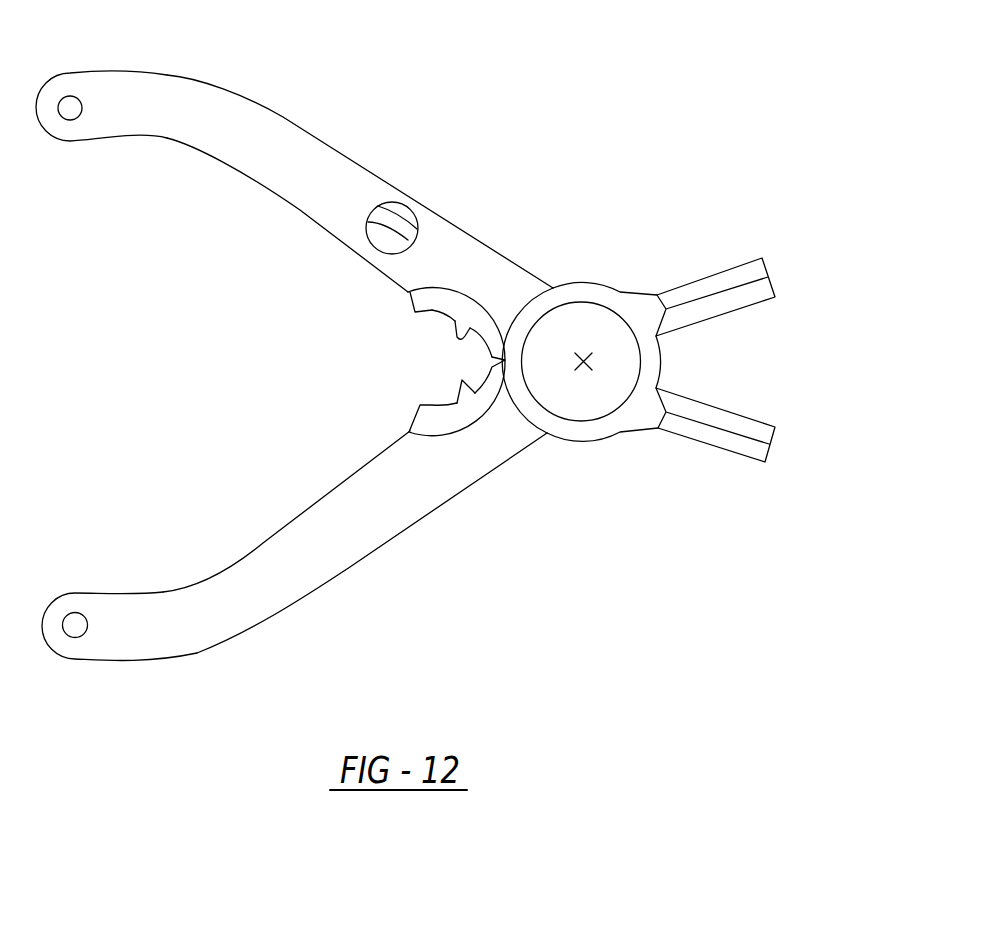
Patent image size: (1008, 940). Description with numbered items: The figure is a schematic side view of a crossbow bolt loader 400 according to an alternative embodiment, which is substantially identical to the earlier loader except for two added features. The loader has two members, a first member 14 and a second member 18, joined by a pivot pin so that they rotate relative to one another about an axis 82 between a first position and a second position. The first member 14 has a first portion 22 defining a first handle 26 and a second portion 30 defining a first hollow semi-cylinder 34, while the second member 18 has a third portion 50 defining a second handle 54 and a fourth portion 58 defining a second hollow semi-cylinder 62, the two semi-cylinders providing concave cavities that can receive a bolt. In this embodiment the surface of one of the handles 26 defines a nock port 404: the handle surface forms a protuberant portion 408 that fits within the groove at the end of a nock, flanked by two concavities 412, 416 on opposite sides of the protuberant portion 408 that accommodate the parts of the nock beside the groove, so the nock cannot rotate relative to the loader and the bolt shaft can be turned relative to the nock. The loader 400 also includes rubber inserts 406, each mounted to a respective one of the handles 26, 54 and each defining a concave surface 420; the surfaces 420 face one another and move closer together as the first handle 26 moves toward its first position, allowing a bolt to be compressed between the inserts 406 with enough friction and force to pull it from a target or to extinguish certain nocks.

The first member 14 is at (130, 653).
The second member 18 is at (158, 110).
The first portion 22 is at (360, 171).
The first handle 26 is at (283, 130).
The second portion 30 is at (755, 254).
The first hollow semi-cylinder 34 is at (748, 272).
The third portion 50 is at (355, 542).
The second handle 54 is at (280, 605).
The fourth portion 58 is at (771, 453).
The second hollow semi-cylinder 62 is at (765, 462).
The axis 82 is at (583, 361).
The crossbow bolt loader 400 is at (612, 303).
The nock port 404 is at (440, 225).
The rubber inserts 406 is at (432, 312).
The protuberant portion 408 is at (403, 204).
The concavity 412 is at (382, 243).
The concavity 416 is at (390, 210).
The concave surface 420 is at (462, 335).